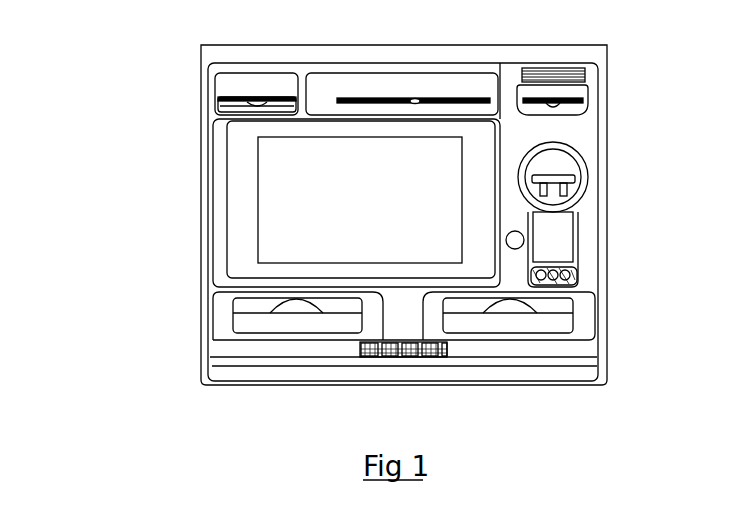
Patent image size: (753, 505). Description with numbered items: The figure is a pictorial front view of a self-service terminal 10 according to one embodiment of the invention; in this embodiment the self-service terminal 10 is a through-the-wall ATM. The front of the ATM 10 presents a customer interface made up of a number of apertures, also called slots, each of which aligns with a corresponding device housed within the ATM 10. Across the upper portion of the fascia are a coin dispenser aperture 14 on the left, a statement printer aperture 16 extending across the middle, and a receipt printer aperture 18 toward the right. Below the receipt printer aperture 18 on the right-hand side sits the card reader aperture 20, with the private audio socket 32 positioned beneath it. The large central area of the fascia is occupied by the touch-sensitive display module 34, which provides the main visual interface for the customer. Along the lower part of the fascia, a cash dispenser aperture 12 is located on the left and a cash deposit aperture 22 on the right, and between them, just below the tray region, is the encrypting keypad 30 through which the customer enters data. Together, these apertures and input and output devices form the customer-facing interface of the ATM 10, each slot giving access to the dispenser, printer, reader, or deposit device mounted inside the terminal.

The self-service terminal 10 is at (101, 413).
The cash dispenser aperture 12 is at (227, 325).
The coin dispenser aperture 14 is at (228, 100).
The statement printer aperture 16 is at (428, 100).
The receipt printer aperture 18 is at (572, 96).
The card reader aperture 20 is at (572, 178).
The cash deposit aperture 22 is at (562, 313).
The encrypting keypad 30 is at (412, 333).
The private audio socket 32 is at (562, 274).
The touch-sensitive display module 34 is at (264, 183).